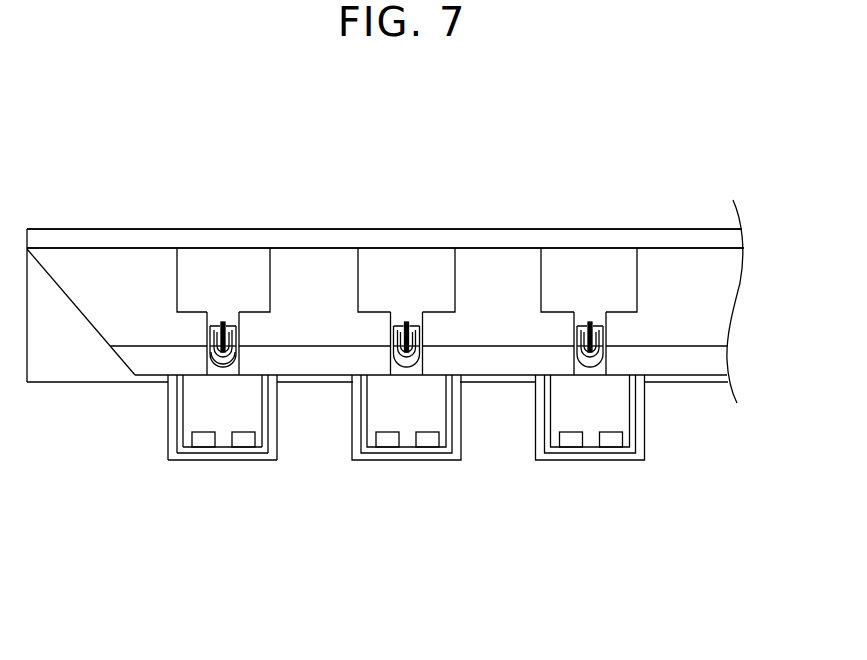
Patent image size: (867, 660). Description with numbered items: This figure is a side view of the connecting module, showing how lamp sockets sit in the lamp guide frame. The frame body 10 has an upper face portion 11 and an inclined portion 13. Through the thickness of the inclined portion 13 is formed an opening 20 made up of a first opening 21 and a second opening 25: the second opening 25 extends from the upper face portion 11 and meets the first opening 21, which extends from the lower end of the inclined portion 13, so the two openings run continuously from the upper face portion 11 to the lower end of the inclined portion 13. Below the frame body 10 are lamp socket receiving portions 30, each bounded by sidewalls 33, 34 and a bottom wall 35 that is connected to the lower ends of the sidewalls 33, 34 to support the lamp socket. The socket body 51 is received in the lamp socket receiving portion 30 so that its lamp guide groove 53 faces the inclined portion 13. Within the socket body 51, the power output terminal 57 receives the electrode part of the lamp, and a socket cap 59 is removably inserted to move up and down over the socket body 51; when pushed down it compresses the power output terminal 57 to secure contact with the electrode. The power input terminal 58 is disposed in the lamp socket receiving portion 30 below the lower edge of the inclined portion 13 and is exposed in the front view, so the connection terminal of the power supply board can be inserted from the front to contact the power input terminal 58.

The frame body 10 is at (542, 168).
The upper face portion 11 is at (470, 249).
The inclined portion 13 is at (510, 270).
The opening 20 is at (170, 168).
The first opening 21 is at (211, 320).
The second opening 25 is at (181, 274).
The socket cap 59 is at (237, 330).
The power output terminal 57 is at (215, 348).
The lamp guide groove 53 is at (222, 370).
The lamp socket receiving portion 30 is at (293, 548).
The sidewall 33 is at (167, 436).
The bottom wall 35 is at (227, 457).
The sidewall 34 is at (277, 440).
The socket body 51 is at (384, 452).
The power input terminal 58 is at (428, 442).